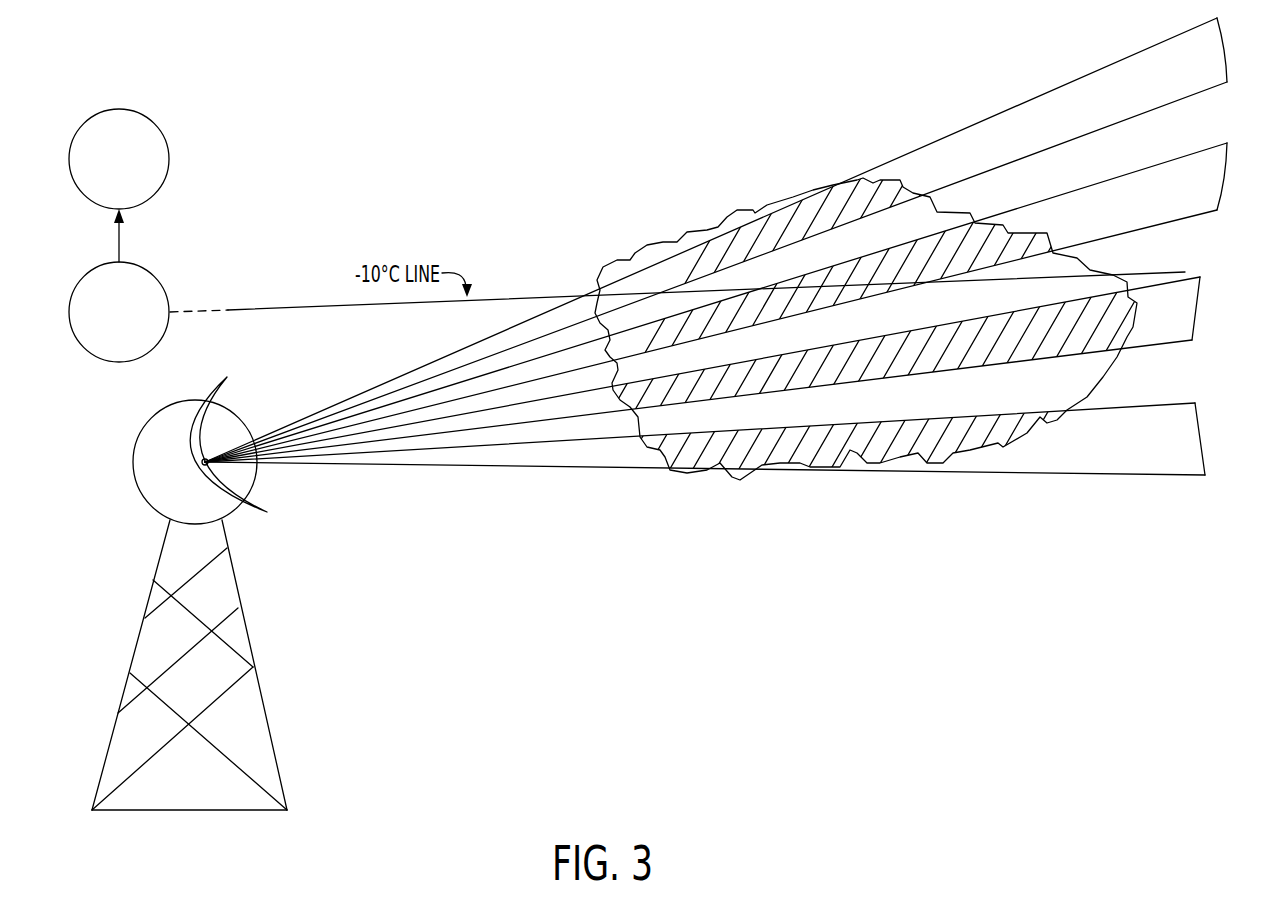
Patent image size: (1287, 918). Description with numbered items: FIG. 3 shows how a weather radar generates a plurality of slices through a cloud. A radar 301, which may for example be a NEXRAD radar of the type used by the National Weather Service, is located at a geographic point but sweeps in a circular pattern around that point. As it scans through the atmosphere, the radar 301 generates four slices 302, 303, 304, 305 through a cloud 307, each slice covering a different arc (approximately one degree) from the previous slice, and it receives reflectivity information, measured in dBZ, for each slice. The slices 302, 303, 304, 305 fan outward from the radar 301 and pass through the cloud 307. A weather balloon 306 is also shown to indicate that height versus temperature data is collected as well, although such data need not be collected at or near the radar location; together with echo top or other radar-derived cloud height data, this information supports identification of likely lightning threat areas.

The radar 301 is at (284, 612).
The slice 302 is at (1080, 478).
The slice 303 is at (1170, 345).
The slice 304 is at (1200, 214).
The slice 305 is at (988, 120).
The weather balloon 306 is at (120, 110).
The cloud 307 is at (692, 214).